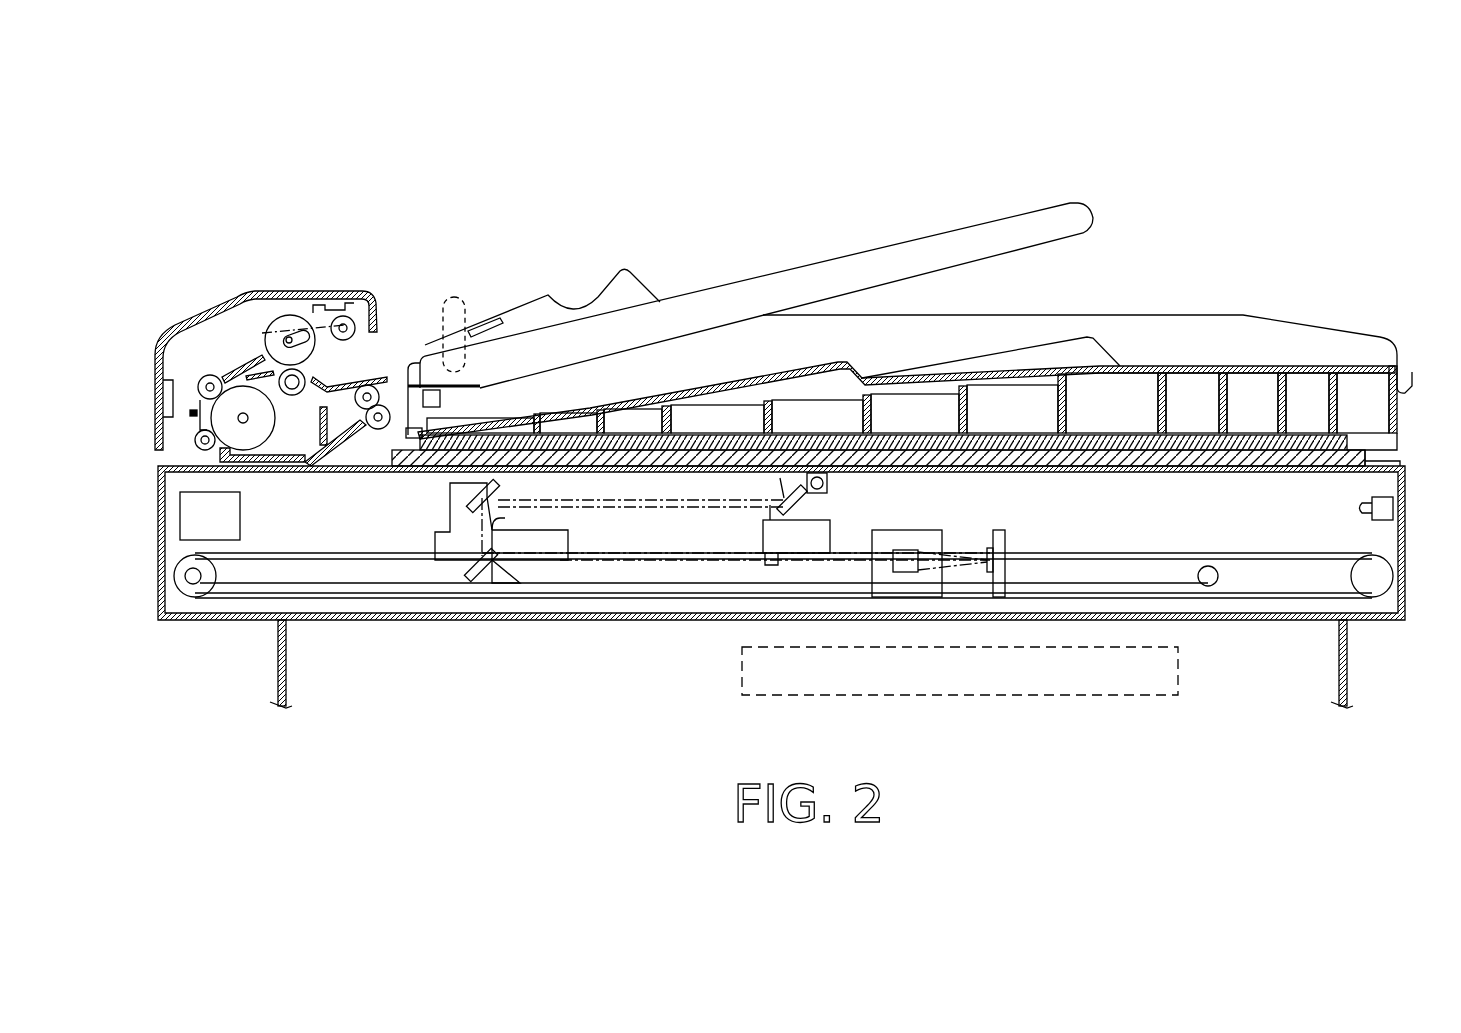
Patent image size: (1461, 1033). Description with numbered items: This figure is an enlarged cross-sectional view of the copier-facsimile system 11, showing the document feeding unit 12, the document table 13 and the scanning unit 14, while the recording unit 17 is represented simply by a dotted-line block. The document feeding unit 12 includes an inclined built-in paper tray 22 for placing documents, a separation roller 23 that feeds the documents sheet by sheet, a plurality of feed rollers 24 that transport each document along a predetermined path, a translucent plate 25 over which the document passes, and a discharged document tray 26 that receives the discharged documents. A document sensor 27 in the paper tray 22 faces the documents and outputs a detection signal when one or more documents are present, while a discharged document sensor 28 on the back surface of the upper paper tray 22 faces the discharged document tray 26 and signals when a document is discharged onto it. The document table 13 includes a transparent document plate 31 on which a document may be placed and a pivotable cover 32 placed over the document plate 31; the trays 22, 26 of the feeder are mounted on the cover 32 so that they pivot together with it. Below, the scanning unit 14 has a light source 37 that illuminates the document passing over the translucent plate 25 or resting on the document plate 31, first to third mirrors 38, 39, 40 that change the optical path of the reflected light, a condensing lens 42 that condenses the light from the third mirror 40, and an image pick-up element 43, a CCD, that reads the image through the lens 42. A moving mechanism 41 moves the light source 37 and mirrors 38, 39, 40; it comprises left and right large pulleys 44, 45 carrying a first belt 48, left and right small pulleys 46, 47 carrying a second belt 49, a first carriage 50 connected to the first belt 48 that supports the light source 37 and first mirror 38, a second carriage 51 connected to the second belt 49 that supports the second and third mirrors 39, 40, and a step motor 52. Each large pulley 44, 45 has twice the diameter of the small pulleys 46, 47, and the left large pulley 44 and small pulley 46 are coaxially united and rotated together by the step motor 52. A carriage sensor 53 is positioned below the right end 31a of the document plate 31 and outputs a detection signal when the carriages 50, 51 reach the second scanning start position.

The copier-facsimile system 11 is at (1405, 528).
The document feeding unit 12 is at (206, 313).
The document table 13 is at (1178, 313).
The scanning unit 14 is at (1030, 534).
The recording unit 17 is at (940, 682).
The paper tray 22 is at (812, 262).
The separation roller 23 is at (290, 318).
The feed rollers 24 is at (210, 376).
The translucent plate 25 is at (266, 464).
The discharged document tray 26 is at (655, 400).
The document sensor 27 is at (460, 318).
The discharged document sensor 28 is at (432, 388).
The transparent document plate 31 is at (1183, 462).
The right end of the document table 31a is at (1375, 452).
The cover 32 is at (1127, 443).
The light source 37 is at (828, 481).
The first mirror 38 is at (765, 523).
The second mirror 39 is at (466, 500).
The third mirror 40 is at (480, 583).
The moving mechanism 41 is at (259, 598).
The condensing lens 42 is at (908, 552).
The image pick-up element 43 is at (990, 530).
The left large pulley 44 is at (193, 598).
The right large pulley 45 is at (1385, 577).
The left small pulley 46 is at (186, 576).
The right small pulley 47 is at (1212, 588).
The first belt 48 is at (584, 600).
The second belt 49 is at (666, 592).
The first carriage 50 is at (828, 542).
The second carriage 51 is at (560, 543).
The step motor 52 is at (240, 515).
The carriage sensor 53 is at (1373, 513).